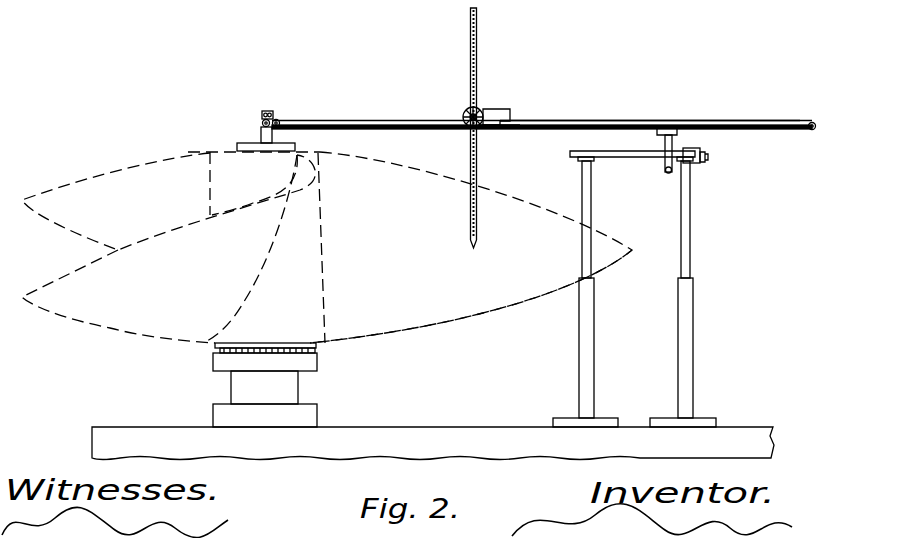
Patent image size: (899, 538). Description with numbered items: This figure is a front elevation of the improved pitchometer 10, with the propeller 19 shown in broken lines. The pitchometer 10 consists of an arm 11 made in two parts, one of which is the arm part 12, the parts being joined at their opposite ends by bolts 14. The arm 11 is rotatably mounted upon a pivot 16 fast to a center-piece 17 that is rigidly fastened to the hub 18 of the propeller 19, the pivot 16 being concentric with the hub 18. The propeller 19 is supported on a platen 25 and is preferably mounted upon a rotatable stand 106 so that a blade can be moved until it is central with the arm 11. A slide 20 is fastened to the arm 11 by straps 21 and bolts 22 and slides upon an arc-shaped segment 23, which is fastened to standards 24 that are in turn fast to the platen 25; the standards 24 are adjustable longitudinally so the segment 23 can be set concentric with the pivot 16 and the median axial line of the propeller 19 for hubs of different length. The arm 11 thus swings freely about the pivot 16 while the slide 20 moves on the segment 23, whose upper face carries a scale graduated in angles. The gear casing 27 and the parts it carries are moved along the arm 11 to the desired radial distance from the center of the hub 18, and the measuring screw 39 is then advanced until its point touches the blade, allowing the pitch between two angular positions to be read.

The pitchometer 10 is at (500, 144).
The arm 11 is at (650, 110).
The arm part 12 is at (542, 142).
The bolt 14 is at (278, 119).
The pivot 16 is at (268, 111).
The center-piece 17 is at (268, 133).
The hub 18 is at (327, 280).
The propeller 19 is at (471, 300).
The slide 20 is at (692, 150).
The strap 21 is at (663, 142).
The bolt 22 is at (672, 129).
The arc-shaped segment 23 is at (639, 158).
The standard 24 is at (592, 325).
The platen 25 is at (454, 437).
The gear casing 27 is at (498, 109).
The measuring screw 39 is at (470, 66).
The rotatable stand 106 is at (305, 360).